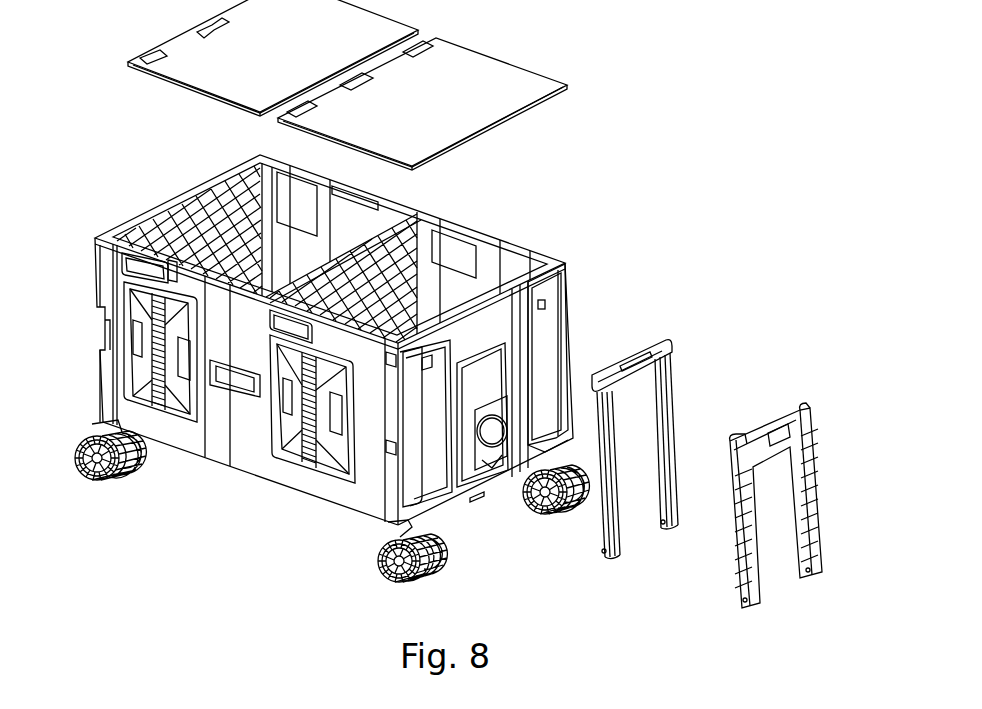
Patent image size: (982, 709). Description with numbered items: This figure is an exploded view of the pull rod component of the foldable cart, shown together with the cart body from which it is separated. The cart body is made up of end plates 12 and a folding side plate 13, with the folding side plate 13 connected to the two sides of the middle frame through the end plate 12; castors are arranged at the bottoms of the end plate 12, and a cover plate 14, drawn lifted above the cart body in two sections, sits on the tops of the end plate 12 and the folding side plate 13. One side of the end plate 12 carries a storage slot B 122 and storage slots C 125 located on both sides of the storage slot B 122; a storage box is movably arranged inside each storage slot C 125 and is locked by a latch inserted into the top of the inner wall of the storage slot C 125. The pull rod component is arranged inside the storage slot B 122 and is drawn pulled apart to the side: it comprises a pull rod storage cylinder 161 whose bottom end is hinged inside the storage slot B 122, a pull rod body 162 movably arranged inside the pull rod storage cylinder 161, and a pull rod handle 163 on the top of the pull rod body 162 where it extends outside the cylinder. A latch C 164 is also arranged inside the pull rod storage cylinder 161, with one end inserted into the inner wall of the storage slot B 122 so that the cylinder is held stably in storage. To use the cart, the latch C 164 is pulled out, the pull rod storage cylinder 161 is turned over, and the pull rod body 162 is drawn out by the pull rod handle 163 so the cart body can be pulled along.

The end plate 12 is at (104, 296).
The folding side plate 13 is at (466, 212).
The cover plate 14 is at (312, 34).
The storage slot B 122 is at (449, 352).
The storage slot C 125 is at (551, 352).
The pull rod storage cylinder 161 is at (739, 480).
The pull rod body 162 is at (679, 377).
The pull rod handle 163 is at (652, 346).
The latch C 164 is at (783, 422).